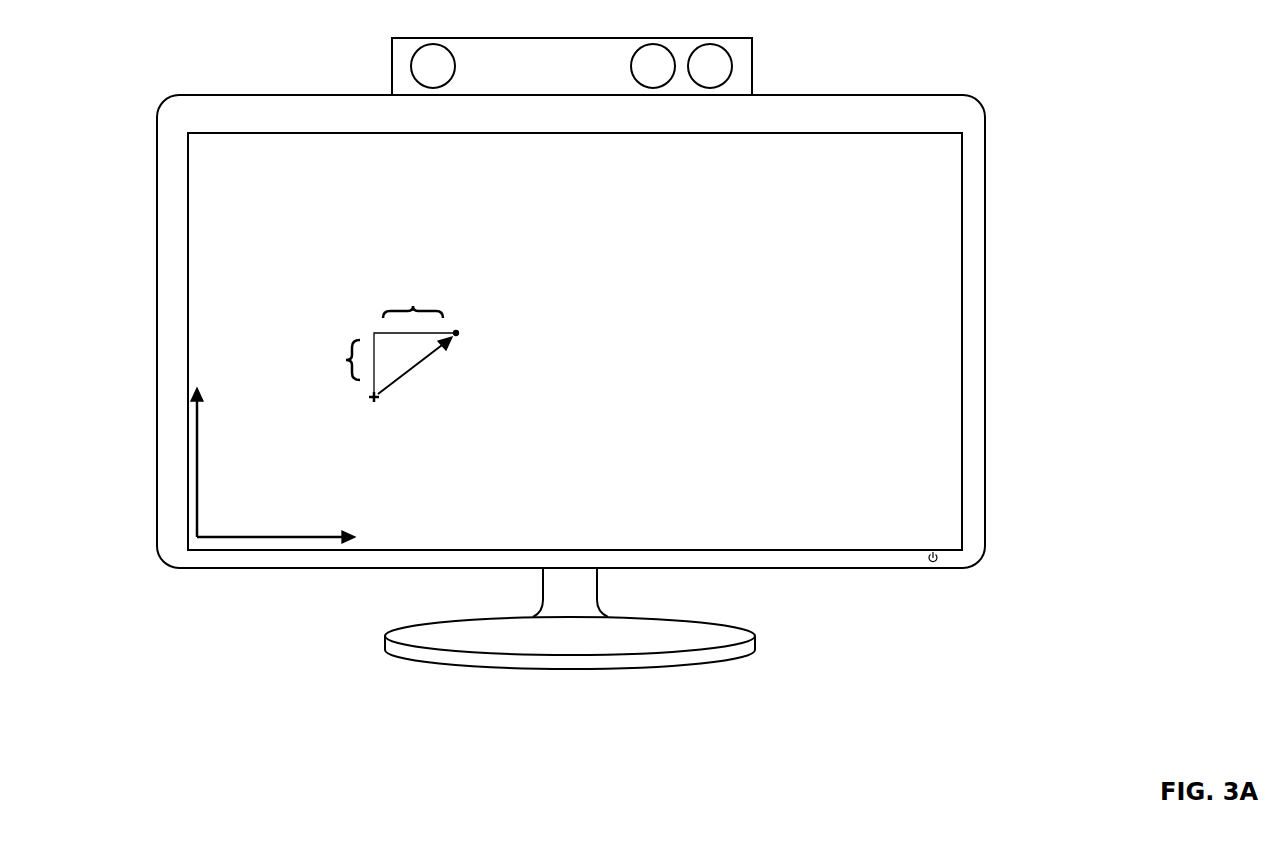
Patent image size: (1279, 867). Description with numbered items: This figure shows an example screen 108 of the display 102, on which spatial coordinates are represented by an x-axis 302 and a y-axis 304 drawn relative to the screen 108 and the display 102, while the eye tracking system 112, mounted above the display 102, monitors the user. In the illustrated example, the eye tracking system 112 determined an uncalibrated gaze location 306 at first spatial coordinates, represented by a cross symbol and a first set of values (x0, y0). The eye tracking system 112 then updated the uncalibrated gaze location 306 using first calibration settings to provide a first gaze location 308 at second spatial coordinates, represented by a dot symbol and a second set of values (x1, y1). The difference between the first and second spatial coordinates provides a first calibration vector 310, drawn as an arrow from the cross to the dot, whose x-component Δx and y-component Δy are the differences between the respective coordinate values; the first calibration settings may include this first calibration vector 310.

The display 102 is at (880, 94).
The screen 108 is at (928, 198).
The eye tracking system 112 is at (503, 38).
The x-axis 302 is at (222, 538).
The y-axis 304 is at (197, 440).
The uncalibrated gaze location 306 is at (372, 400).
The first gaze location 308 is at (460, 330).
The first calibration vector 310 is at (423, 365).